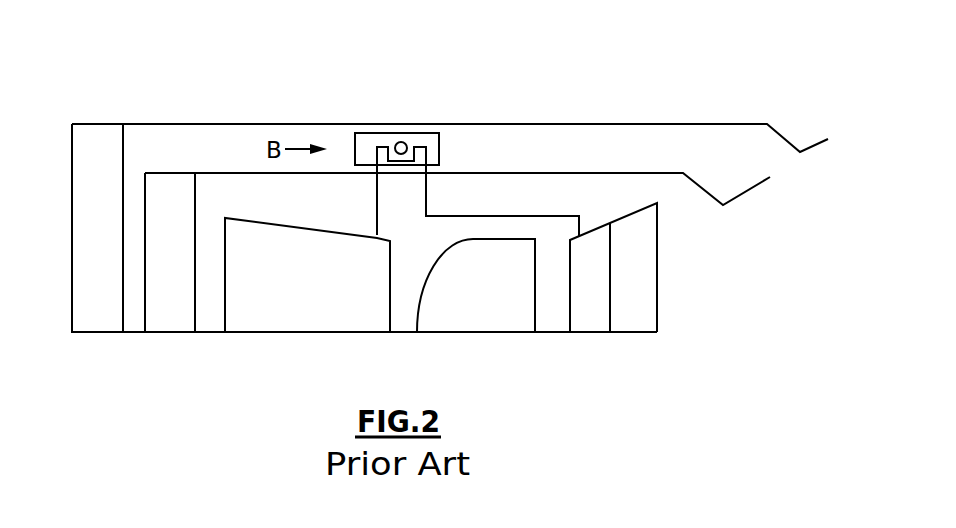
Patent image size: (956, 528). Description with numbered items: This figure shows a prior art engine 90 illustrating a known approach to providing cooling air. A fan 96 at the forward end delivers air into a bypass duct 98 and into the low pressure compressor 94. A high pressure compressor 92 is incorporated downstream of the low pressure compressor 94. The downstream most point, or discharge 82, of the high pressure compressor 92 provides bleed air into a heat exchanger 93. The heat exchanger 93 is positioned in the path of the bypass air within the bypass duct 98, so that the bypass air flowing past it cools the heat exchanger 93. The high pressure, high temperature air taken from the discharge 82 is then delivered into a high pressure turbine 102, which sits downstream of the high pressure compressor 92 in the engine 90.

The engine 90 is at (367, 58).
The fan 96 is at (102, 148).
The bypass duct 98 is at (243, 147).
The low pressure compressor 94 is at (171, 317).
The high pressure compressor 92 is at (346, 312).
The heat exchanger 93 is at (358, 132).
The discharge 82 is at (383, 229).
The high pressure turbine 102 is at (590, 243).